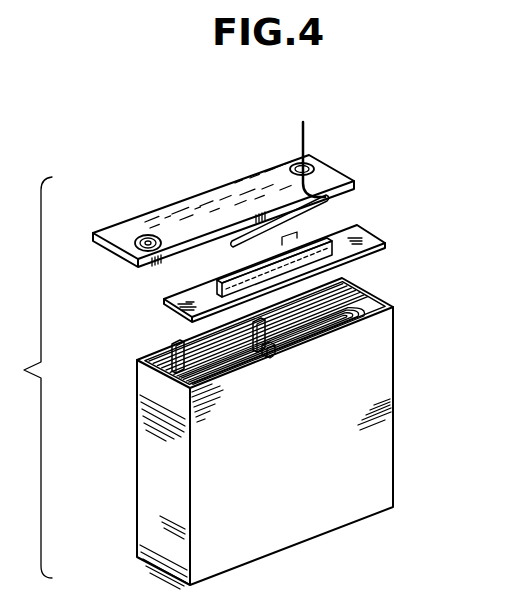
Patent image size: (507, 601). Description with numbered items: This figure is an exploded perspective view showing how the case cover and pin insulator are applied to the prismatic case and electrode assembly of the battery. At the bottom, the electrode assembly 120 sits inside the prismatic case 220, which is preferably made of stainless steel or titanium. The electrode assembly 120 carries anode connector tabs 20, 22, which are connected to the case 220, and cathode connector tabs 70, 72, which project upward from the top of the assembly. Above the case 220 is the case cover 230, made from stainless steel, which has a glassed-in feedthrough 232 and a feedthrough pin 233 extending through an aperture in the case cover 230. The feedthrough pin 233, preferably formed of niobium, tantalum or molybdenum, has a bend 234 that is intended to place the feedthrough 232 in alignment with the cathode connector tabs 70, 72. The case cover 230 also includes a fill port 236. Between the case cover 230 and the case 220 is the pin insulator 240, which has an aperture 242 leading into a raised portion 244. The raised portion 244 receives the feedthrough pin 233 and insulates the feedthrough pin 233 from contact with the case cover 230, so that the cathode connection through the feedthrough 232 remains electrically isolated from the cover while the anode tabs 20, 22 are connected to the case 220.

The anode connector tab 20 is at (187, 334).
The anode connector tab 22 is at (147, 350).
The cathode connector tab 70 is at (276, 346).
The cathode connector tab 72 is at (270, 360).
The electrode assembly 120 is at (352, 313).
The prismatic case 220 is at (395, 342).
The case cover 230 is at (366, 154).
The feedthrough 232 is at (308, 165).
The feedthrough pin 233 is at (306, 127).
The bend 234 is at (330, 204).
The fill port 236 is at (142, 236).
The pin insulator 240 is at (403, 240).
The aperture 242 is at (338, 237).
The raised portion 244 is at (328, 268).